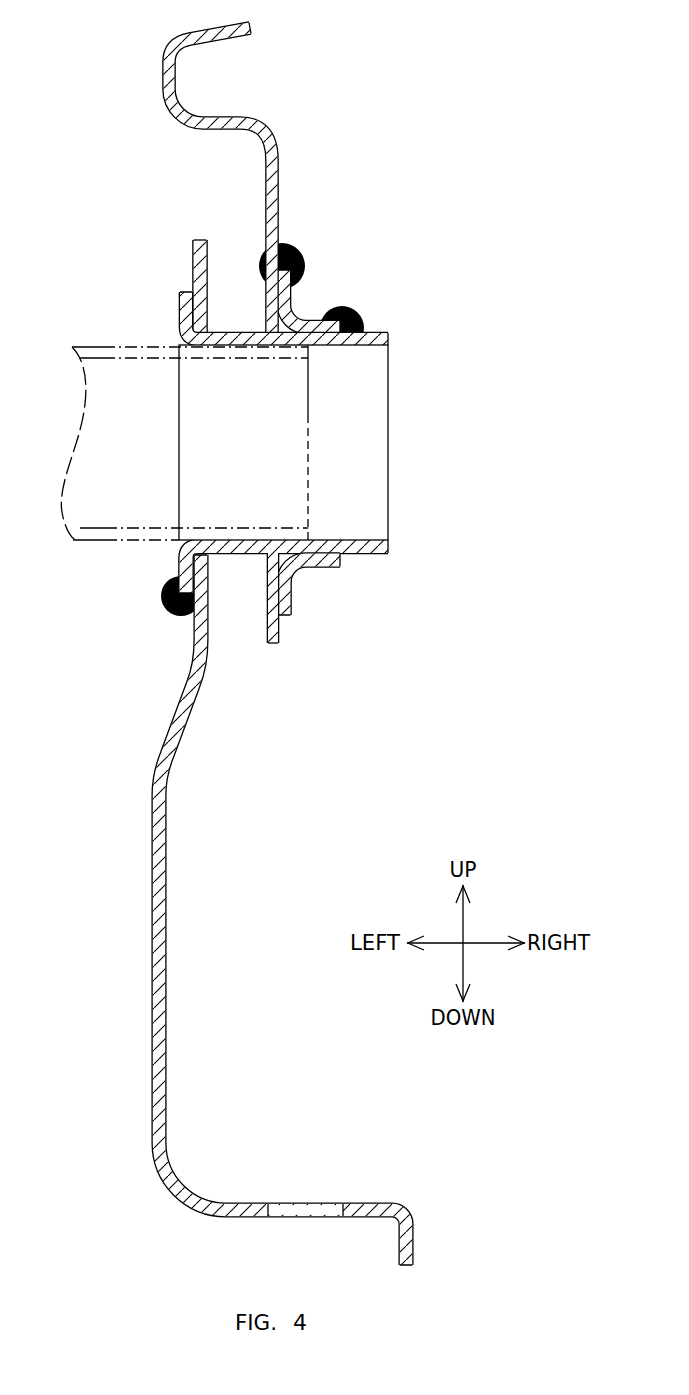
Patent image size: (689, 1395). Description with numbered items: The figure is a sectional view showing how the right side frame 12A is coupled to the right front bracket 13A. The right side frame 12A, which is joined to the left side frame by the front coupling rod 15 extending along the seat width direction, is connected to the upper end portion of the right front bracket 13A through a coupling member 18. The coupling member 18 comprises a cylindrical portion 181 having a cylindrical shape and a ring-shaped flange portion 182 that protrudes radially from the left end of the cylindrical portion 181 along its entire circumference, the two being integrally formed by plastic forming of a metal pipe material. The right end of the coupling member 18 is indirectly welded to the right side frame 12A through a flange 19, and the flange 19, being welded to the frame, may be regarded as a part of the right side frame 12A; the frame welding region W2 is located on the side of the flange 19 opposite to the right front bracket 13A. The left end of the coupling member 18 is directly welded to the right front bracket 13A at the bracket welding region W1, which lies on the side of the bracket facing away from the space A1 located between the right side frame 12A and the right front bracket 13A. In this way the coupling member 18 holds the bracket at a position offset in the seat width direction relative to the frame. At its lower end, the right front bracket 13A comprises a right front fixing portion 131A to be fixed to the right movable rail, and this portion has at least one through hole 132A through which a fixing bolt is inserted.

The right side frame 12A is at (282, 175).
The flange 19 is at (294, 313).
The frame welding region W2 is at (362, 306).
The coupling member 18 is at (330, 442).
The cylindrical portion 181 is at (367, 477).
The flange portion 182 is at (178, 324).
The front coupling rod 15 is at (103, 347).
The bracket welding region W1 is at (170, 606).
The space A1 is at (240, 596).
The right front bracket 13A is at (310, 934).
The right front fixing portion 131A is at (376, 1202).
The through hole 132A is at (320, 1217).